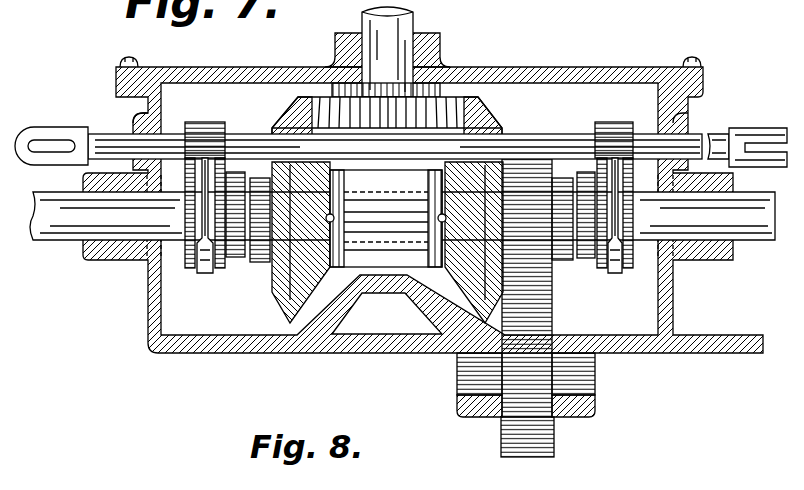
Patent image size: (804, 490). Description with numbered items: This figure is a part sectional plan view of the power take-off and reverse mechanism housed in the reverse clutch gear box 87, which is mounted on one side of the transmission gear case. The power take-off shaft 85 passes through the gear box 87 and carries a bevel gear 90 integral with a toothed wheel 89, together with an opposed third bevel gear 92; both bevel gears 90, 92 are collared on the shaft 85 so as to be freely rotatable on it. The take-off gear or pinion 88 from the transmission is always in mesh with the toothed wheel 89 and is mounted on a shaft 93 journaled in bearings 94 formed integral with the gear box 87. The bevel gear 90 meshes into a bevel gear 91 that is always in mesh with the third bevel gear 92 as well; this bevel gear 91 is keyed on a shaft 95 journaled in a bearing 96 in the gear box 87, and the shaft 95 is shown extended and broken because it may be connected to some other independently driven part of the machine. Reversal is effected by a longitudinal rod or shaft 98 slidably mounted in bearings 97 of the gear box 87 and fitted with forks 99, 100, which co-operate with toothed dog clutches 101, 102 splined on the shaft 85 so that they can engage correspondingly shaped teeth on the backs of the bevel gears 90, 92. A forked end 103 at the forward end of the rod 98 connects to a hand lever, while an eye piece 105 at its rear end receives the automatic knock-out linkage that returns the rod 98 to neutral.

The power take-off shaft 85 is at (40, 243).
The reverse clutch gear box 87 is at (672, 66).
The take-off gear or pinion 88 is at (546, 456).
The toothed wheel 89 is at (538, 283).
The bevel gear 90 is at (452, 262).
The bevel gear 91 is at (462, 113).
The third bevel gear 92 is at (284, 291).
The shaft 93 is at (590, 376).
The bearings 94 is at (476, 412).
The shaft 95 is at (398, 26).
The bearing 96 is at (340, 40).
The bearings 97 is at (138, 122).
The longitudinal rod or shaft 98 is at (243, 134).
The fork 99 is at (612, 276).
The fork 100 is at (205, 275).
The toothed dog clutch 101 is at (628, 270).
The toothed dog clutch 102 is at (189, 270).
The forked end 103 is at (764, 128).
The eye piece 105 is at (47, 127).